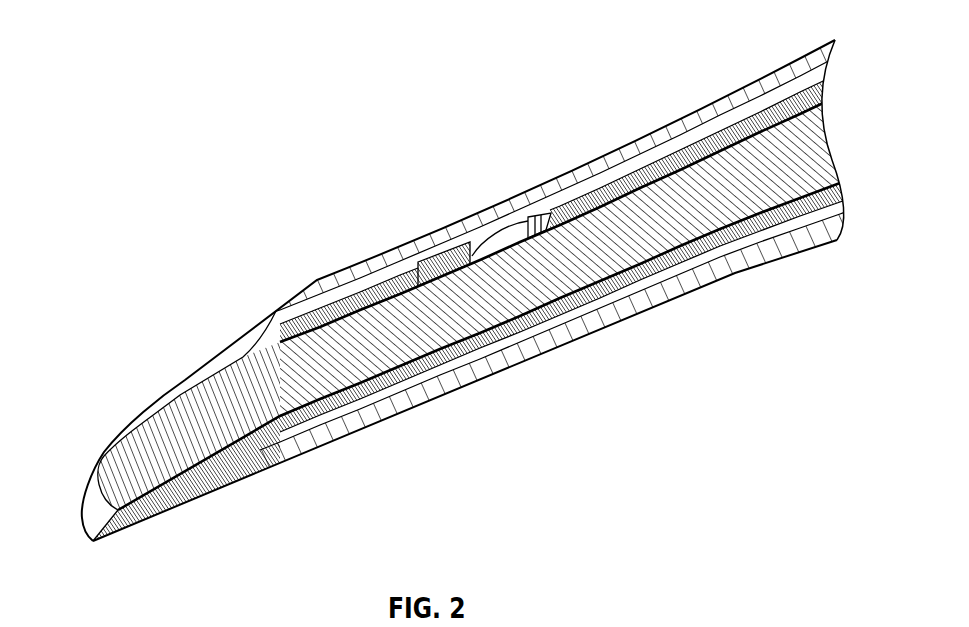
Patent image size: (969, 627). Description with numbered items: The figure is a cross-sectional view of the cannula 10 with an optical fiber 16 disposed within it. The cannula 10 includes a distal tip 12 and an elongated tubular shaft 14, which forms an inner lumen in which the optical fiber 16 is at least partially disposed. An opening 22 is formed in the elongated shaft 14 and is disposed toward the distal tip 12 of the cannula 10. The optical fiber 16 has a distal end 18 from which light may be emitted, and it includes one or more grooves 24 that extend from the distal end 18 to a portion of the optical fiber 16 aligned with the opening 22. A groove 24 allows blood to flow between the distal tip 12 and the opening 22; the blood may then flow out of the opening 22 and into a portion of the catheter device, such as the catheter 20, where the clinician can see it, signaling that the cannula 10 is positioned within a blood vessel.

The cannula 10 is at (108, 414).
The distal tip 12 is at (93, 537).
The elongated tubular shaft 14 is at (618, 190).
The optical fiber 16 is at (817, 144).
The distal end 18 is at (124, 467).
The catheter 20 is at (448, 232).
The opening 22 is at (513, 240).
The groove 24 is at (416, 262).